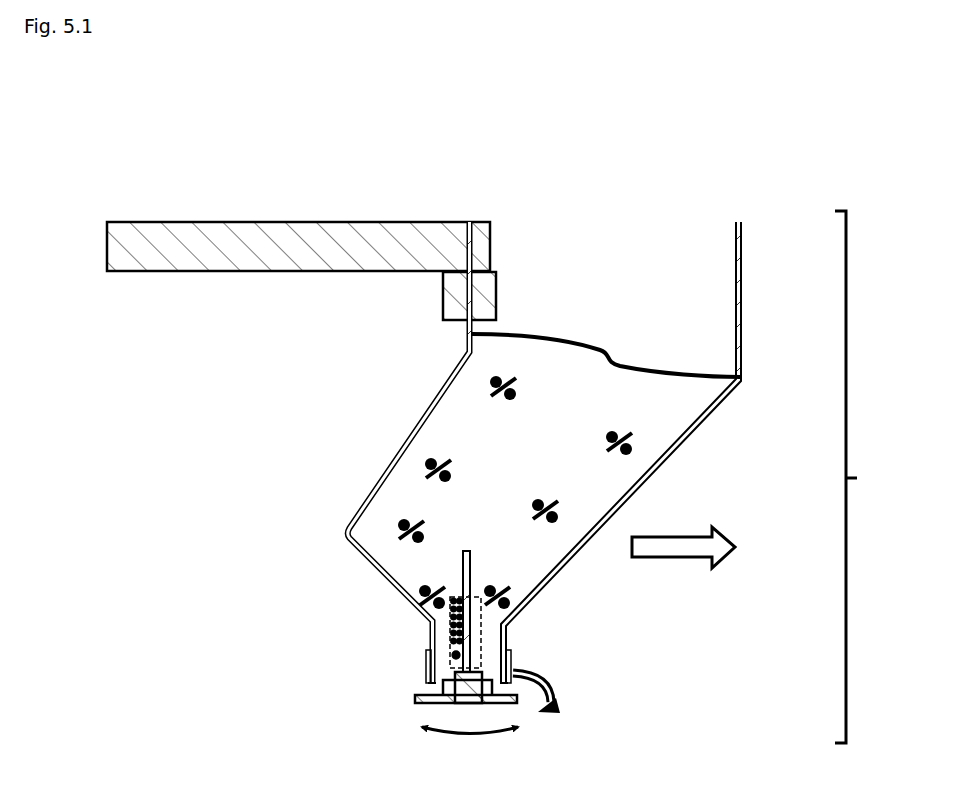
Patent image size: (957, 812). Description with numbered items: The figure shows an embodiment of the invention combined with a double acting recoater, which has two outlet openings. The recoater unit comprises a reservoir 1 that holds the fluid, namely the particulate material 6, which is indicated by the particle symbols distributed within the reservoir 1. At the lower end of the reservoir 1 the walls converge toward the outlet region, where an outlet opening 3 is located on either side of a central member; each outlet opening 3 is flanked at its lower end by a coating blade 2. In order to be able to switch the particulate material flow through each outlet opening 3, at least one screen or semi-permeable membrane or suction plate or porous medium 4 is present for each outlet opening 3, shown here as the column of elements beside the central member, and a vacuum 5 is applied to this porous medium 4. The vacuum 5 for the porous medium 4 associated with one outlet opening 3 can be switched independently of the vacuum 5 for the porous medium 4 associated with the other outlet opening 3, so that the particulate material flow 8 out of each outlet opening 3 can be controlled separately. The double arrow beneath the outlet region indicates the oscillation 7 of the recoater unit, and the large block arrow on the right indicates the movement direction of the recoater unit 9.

The reservoir 1 is at (868, 477).
The coating blade 2 is at (410, 710).
The outlet opening 3 is at (411, 685).
The screen or semi-permeable membrane or suction plate or porous medium 4 is at (446, 624).
The vacuum 5 is at (448, 655).
The fluid (particulate material) 6 is at (640, 448).
The oscillation 7 is at (470, 748).
The fluid flow (particulate material flow) 8 is at (548, 693).
The movement direction of the recoater unit 9 is at (683, 565).